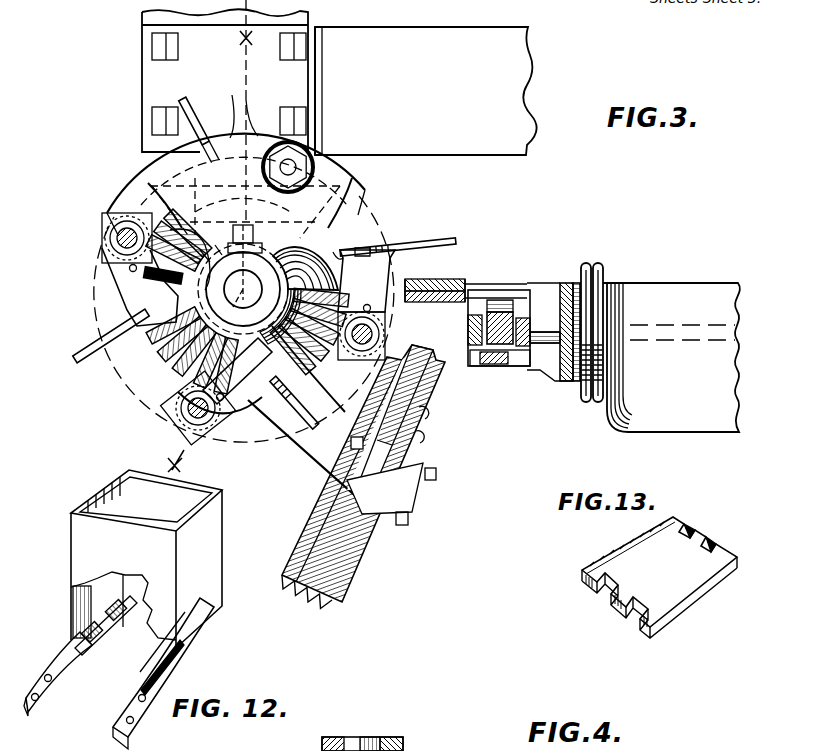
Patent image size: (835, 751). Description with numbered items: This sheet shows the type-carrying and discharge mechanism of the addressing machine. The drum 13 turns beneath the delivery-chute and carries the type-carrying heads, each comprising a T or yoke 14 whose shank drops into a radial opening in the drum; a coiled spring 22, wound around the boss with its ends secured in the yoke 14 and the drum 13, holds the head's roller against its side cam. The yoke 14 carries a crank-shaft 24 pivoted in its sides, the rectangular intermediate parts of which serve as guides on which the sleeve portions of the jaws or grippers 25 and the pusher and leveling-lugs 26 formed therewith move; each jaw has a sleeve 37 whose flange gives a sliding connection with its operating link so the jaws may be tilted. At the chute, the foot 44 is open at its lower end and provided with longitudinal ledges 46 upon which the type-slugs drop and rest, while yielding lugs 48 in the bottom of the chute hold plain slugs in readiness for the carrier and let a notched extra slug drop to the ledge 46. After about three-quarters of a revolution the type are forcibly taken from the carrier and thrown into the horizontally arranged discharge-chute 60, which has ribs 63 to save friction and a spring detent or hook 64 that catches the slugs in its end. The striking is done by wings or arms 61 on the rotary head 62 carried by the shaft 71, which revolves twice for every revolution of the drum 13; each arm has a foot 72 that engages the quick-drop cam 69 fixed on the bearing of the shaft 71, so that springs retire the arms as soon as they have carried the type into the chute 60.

In FIG. 3, the drum 13 is at (689, 292).
In FIG. 3, the T or yoke 14 is at (569, 383).
In FIG. 3, the coiled spring 22 is at (603, 269).
In FIG. 3, the crank-shaft 24 is at (515, 318).
In FIG. 3, the jaws or grippers 25 is at (455, 284).
In FIG. 3, the pusher and leveling-lugs 26 is at (497, 295).
In FIG. 3, the sleeve 37 is at (510, 368).
In FIG. 12, the foot of the delivery-chute 44 is at (220, 536).
In FIG. 12, the longitudinal ledges 46 is at (96, 652).
In FIG. 12, the yielding lugs 48 is at (115, 632).
In FIG. 3, the discharge-chute 60 is at (392, 477).
In FIG. 3, the wings or arms 61 is at (187, 97).
In FIG. 3, the rotary head 62 is at (320, 170).
In FIG. 3, the ribs 63 is at (363, 477).
In FIG. 3, the spring detent or hook 64 is at (437, 439).
In FIG. 3, the quick-drop cam 69 is at (310, 236).
In FIG. 3, the shaft 71 is at (232, 264).
In FIG. 3, the foot 72 is at (380, 254).